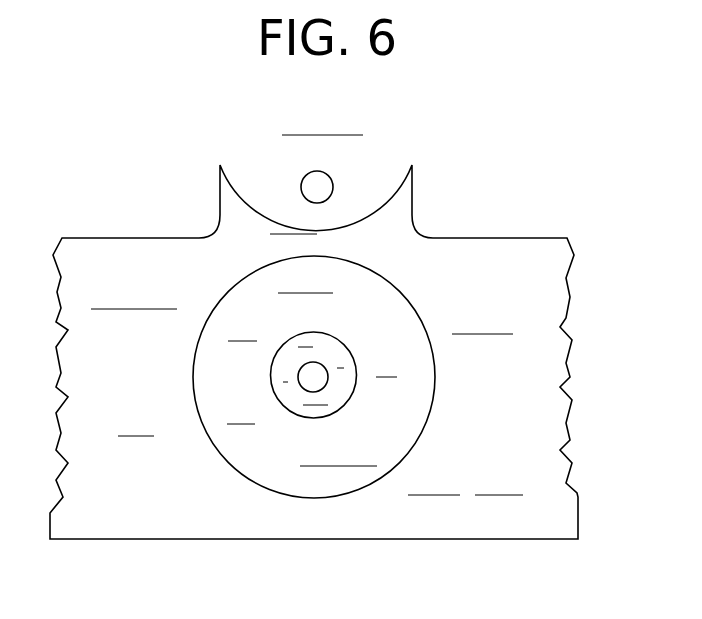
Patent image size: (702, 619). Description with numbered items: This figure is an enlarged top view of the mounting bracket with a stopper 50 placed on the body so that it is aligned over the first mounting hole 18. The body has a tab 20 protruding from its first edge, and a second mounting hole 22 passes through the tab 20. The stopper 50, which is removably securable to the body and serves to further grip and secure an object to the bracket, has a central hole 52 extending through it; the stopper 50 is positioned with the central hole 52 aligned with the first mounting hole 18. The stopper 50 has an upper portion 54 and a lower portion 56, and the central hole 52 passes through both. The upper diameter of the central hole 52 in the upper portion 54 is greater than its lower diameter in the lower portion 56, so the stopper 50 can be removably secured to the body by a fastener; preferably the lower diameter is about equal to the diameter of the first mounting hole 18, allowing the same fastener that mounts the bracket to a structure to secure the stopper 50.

The stopper 50 is at (354, 458).
The tab 20 is at (262, 147).
The second mounting hole 22 is at (320, 183).
The upper portion 54 is at (402, 430).
The central hole 52 is at (348, 348).
The lower portion 56 is at (338, 387).
The first mounting hole 18 is at (310, 384).